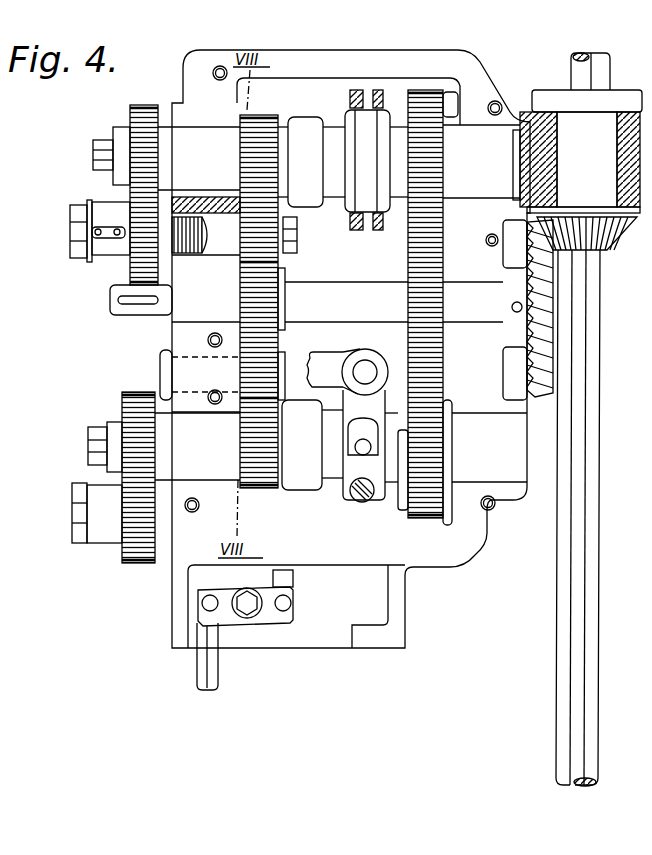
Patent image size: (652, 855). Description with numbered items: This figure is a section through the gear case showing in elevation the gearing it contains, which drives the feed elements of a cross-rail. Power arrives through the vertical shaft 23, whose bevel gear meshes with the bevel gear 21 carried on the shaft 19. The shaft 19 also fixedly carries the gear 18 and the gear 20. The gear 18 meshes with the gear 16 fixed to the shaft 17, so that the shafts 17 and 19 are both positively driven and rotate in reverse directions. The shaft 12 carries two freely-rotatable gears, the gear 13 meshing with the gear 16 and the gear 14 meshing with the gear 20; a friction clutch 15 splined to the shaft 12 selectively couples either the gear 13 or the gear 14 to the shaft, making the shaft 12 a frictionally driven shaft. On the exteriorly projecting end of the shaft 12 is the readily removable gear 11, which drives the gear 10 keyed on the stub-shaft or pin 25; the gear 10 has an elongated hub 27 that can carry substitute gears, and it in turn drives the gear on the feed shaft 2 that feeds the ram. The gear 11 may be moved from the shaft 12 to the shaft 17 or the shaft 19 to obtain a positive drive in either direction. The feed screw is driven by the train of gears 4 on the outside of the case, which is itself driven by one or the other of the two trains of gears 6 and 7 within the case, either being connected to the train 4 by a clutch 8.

The feed shaft 2 is at (600, 245).
The train of gears 4 is at (70, 438).
The train of gears 6 is at (345, 414).
The train of gears 7 is at (433, 430).
The clutch 8 is at (353, 467).
The gear 10 is at (137, 236).
The gear 11 is at (140, 118).
The shaft 12 is at (190, 140).
The gear 13 is at (274, 122).
The gear 14 is at (432, 184).
The friction clutch 15 is at (358, 148).
The gear 16 is at (298, 236).
The shaft 17 is at (205, 266).
The gear 18 is at (285, 286).
The shaft 19 is at (350, 294).
The gear 20 is at (432, 288).
The bevel gear 21 is at (548, 306).
The vertical shaft 23 is at (604, 568).
The stub-shaft or pin 25 is at (121, 296).
The elongated hub 27 is at (100, 203).